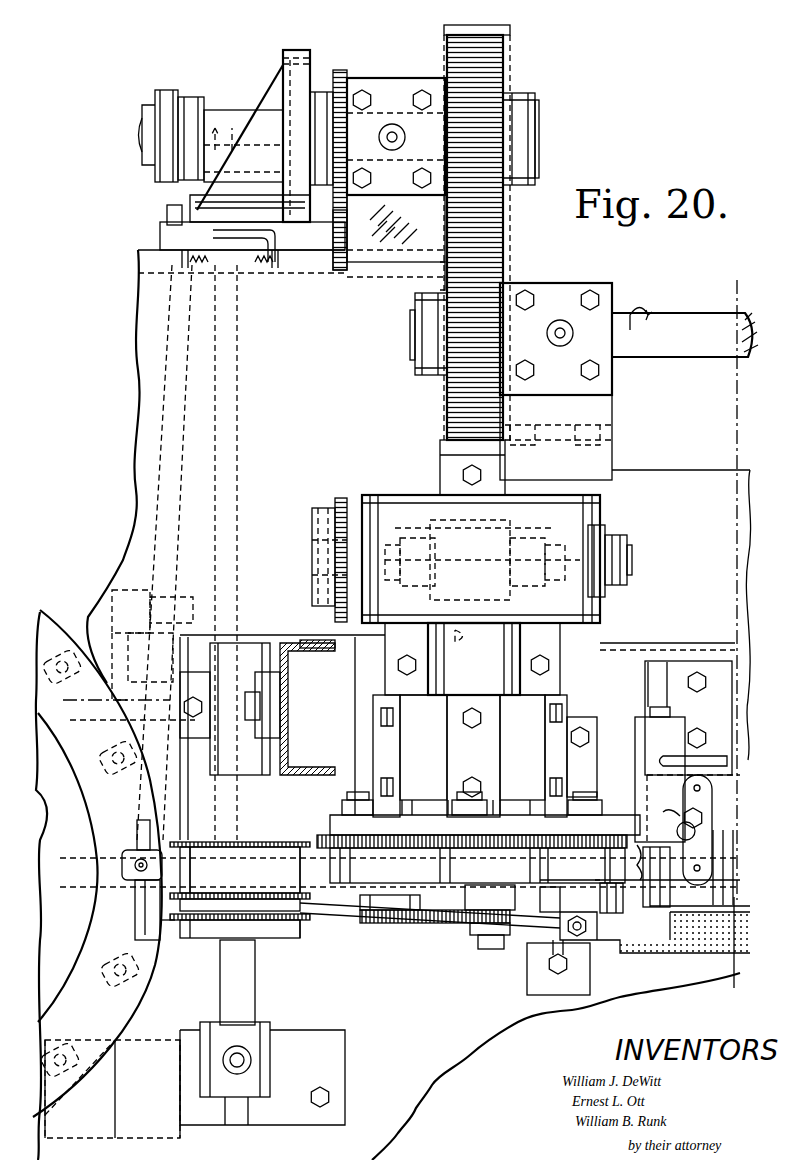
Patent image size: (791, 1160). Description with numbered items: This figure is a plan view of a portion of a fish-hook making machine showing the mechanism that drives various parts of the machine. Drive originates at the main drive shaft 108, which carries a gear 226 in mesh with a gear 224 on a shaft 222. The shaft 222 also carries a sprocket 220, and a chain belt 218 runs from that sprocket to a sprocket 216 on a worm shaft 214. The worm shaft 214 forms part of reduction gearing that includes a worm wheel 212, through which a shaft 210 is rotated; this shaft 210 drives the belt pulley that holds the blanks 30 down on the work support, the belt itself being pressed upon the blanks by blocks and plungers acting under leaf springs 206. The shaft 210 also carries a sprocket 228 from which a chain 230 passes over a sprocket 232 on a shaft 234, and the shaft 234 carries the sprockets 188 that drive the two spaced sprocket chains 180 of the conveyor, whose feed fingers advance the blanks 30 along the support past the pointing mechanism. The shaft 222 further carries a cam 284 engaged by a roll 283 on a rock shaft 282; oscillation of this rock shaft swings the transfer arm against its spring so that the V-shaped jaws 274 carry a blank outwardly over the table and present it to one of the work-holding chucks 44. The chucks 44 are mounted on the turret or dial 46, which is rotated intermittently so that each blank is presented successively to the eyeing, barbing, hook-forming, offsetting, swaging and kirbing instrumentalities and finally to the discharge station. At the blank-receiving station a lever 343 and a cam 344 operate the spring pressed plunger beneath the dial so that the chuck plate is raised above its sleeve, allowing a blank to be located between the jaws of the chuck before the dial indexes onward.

The blanks 30 is at (145, 922).
The work-holding chucks 44 is at (135, 882).
The turret or dial 46 is at (120, 1011).
The main drive shaft 108 is at (683, 322).
The sprocket chains 180 is at (182, 840).
The sprockets 188 is at (262, 840).
The leaf springs 206 is at (700, 805).
The shaft 210 is at (550, 632).
The worm wheel 212 is at (600, 530).
The worm shaft 214 is at (385, 525).
The sprocket 216 is at (345, 495).
The chain belt 218 is at (340, 275).
The sprocket 220 is at (340, 75).
The shaft 222 is at (540, 142).
The gear 224 is at (485, 60).
The gear 226 is at (475, 275).
The sprocket 228 is at (505, 930).
The chain 230 is at (420, 925).
The sprocket 232 is at (308, 920).
The shaft 234 is at (245, 1003).
The V-shaped jaws 274 is at (220, 840).
The rock shaft 282 is at (237, 407).
The roll 283 is at (170, 215).
The cam 284 is at (300, 65).
The lever 343 is at (165, 352).
The cam 344 is at (190, 98).